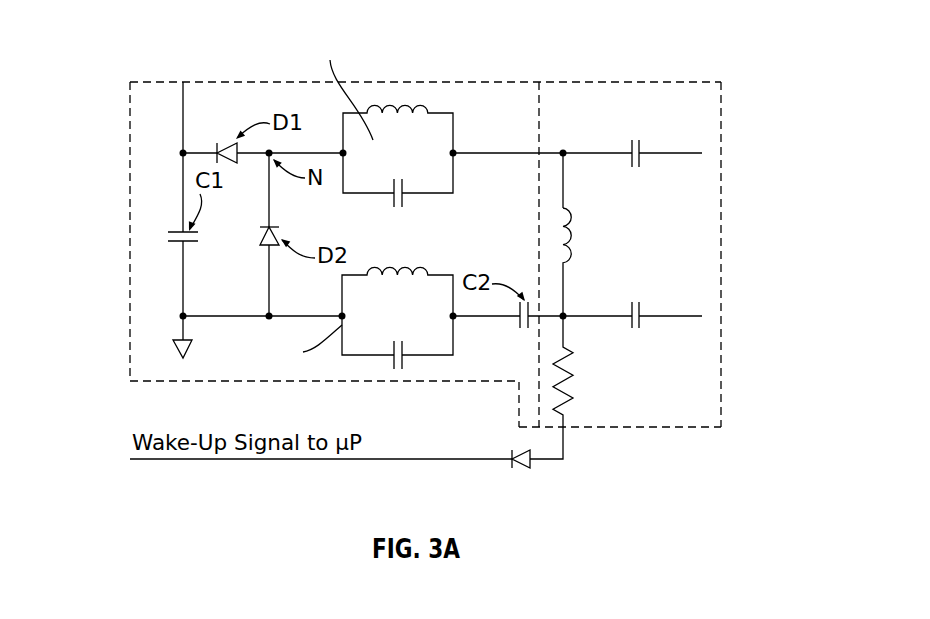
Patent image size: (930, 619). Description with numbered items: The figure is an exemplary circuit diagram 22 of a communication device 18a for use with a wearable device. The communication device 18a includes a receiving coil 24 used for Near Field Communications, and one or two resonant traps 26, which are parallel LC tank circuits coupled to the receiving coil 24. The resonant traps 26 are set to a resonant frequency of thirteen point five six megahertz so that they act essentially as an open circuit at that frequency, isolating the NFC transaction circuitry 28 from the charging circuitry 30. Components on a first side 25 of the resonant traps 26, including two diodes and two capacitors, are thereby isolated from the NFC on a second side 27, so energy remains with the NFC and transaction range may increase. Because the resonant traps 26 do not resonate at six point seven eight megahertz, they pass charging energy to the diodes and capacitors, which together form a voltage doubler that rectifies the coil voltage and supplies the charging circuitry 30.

The circuit diagram 22 is at (758, 43).
The first side 25 is at (487, 80).
The resonant trap 26 is at (448, 113).
The second side 27 is at (639, 80).
The communication device 18a is at (541, 114).
The receiving coil 24 is at (574, 230).
The NFC transaction circuitry 28 is at (708, 214).
The charging circuitry 30 is at (183, 170).